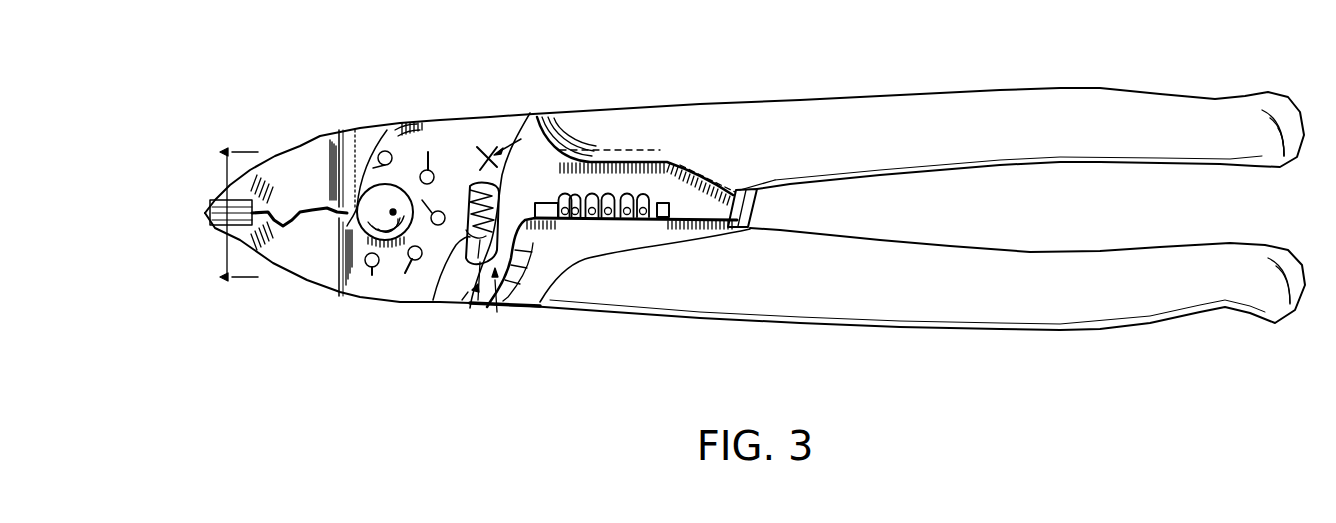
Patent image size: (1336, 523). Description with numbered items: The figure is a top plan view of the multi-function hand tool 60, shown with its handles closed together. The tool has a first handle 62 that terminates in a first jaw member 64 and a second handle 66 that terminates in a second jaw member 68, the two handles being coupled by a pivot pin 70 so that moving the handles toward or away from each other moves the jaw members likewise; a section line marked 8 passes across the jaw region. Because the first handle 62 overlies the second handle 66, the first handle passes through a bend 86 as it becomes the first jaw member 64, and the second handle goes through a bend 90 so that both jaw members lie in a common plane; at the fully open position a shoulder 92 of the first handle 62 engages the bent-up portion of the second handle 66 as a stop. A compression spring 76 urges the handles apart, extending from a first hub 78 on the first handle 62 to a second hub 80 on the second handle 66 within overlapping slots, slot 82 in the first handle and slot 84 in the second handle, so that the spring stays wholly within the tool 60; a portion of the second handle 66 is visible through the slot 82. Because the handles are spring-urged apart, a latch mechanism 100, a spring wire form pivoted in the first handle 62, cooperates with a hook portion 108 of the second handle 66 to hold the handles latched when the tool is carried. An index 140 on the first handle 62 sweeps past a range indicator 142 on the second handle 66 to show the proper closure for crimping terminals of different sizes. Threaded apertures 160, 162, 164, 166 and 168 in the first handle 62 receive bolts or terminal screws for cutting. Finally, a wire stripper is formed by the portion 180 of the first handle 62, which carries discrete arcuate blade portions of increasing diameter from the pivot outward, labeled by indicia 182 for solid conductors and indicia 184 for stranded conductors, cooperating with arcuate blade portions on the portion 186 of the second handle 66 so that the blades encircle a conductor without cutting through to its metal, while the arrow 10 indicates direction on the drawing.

The multi-function hand tool 60 is at (1098, 208).
The first handle 62 is at (1040, 110).
The second handle 66 is at (1003, 305).
The first jaw member 64 is at (315, 258).
The second jaw member 68 is at (303, 161).
The section line 8- 8 is at (246, 216).
The bend 90 is at (329, 150).
The shoulder 92 is at (362, 140).
The bend 86 is at (333, 250).
The threaded aperture 168 is at (424, 124).
The pivot pin 70 is at (392, 203).
The threaded aperture 166 is at (428, 168).
The threaded aperture 164 is at (490, 195).
The threaded aperture 162 is at (426, 245).
The threaded aperture 160 is at (372, 270).
The first hub 78 is at (494, 142).
The slot 84 is at (532, 113).
The slot 82 is at (447, 295).
The compression spring 76 is at (433, 292).
The second hub 80 is at (468, 288).
The arrow / wire direction 10 is at (504, 234).
The index 140 is at (520, 300).
The range indicator 142 is at (545, 300).
The blade portion of second handle 186 is at (613, 250).
The indicia for stranded conductors 184 is at (613, 237).
The indicia for solid conductors 182 is at (592, 177).
The wire stripper portion of first handle 180 is at (665, 165).
The latch mechanism 100 is at (697, 197).
The hook portion 108 is at (747, 233).